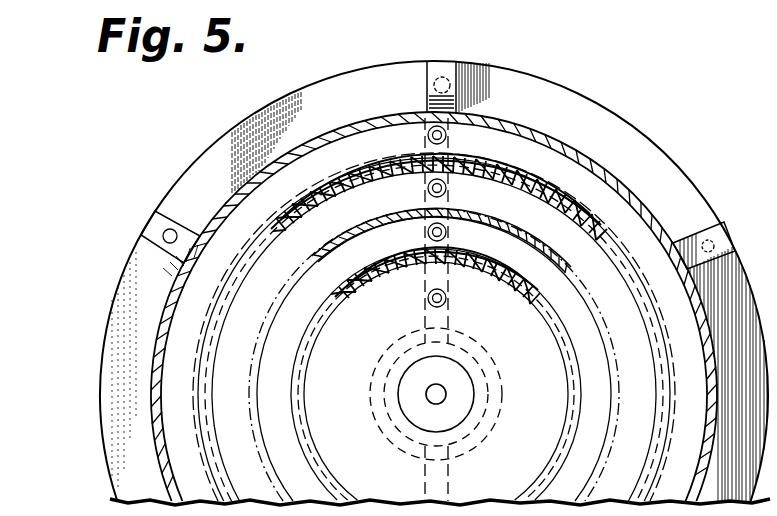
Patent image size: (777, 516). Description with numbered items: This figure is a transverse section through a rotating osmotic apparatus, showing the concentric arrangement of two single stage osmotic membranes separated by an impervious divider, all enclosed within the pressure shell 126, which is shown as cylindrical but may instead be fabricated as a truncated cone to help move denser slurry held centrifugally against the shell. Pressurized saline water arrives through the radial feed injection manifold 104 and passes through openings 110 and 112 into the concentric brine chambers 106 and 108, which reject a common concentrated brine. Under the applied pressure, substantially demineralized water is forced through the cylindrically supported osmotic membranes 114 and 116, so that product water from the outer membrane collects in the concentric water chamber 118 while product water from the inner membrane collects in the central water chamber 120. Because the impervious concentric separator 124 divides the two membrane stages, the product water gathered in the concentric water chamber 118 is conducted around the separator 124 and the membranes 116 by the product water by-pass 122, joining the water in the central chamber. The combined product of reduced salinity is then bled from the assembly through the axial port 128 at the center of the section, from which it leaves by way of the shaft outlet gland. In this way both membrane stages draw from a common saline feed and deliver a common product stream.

The radial feed injection manifold 104 is at (421, 314).
The concentric brine chamber 106 is at (548, 161).
The concentric brine chamber 108 is at (528, 258).
The opening 110 is at (447, 136).
The opening 112 is at (447, 233).
The cylindrically supported osmotic membrane 114 is at (580, 210).
The cylindrically supported osmotic membrane 116 is at (346, 270).
The concentric water chamber 118 is at (372, 168).
The central water chamber 120 is at (368, 464).
The product water by-pass 122 is at (447, 189).
The impervious concentric separator 124 is at (309, 259).
The pressure shell 126 is at (348, 118).
The axial port 128 is at (446, 394).